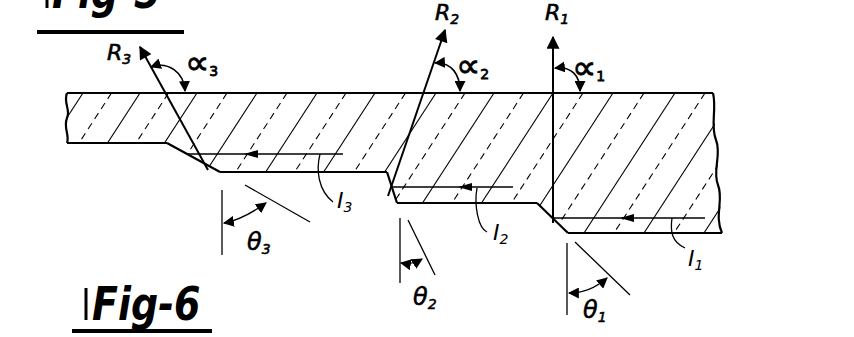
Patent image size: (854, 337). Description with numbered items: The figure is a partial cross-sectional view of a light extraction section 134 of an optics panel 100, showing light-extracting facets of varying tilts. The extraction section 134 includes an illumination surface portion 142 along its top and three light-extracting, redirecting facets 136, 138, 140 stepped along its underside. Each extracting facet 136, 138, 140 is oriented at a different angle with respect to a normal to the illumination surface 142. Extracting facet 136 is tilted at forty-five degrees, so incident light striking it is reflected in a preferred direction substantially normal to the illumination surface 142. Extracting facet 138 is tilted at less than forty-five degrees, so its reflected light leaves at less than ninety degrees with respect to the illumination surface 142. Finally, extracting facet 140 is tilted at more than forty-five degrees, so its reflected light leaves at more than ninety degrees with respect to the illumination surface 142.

The workpiece (stepped member) 100 is at (397, 116).
The light extraction section 134 is at (669, 90).
The illumination surface portion 142 is at (333, 56).
The extracting facet 136 is at (556, 226).
The extracting facet 138 is at (391, 192).
The extracting facet 140 is at (180, 152).